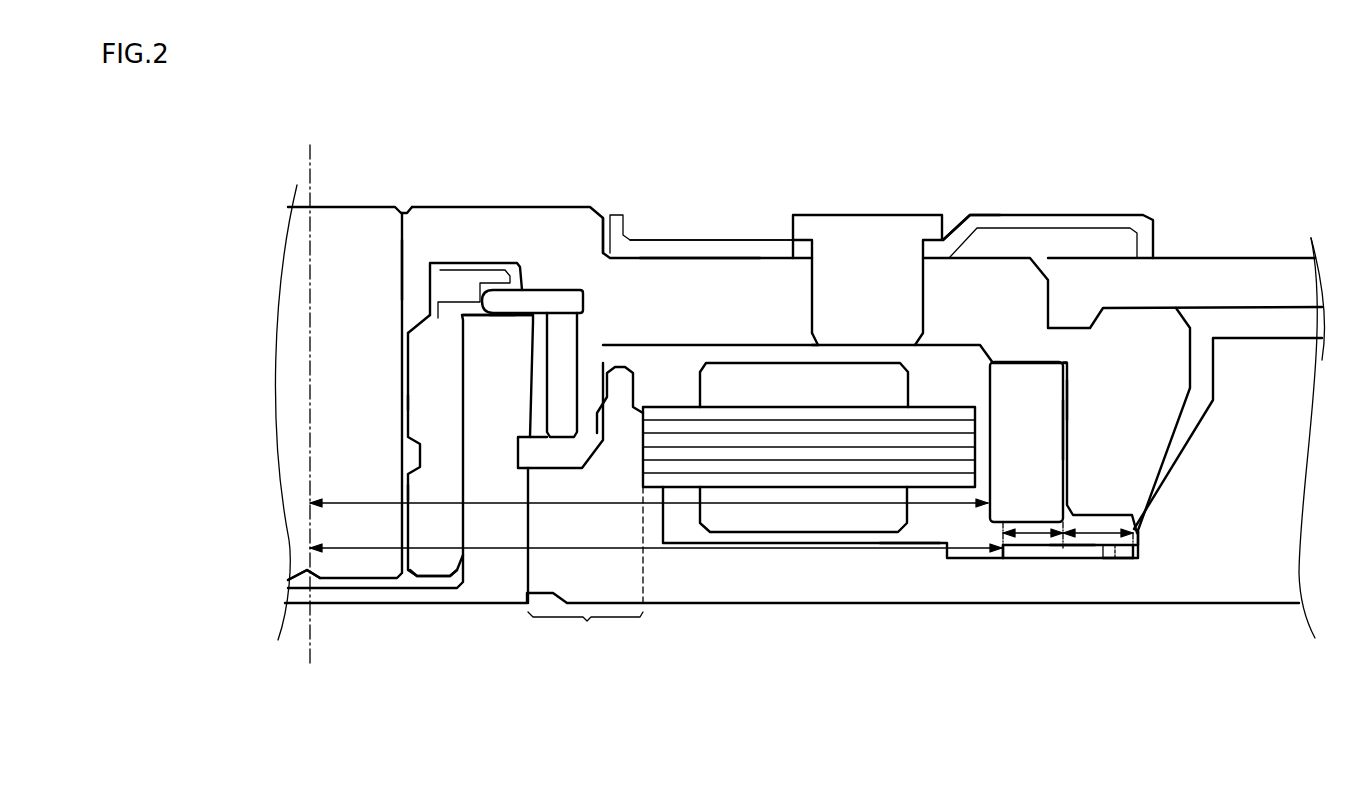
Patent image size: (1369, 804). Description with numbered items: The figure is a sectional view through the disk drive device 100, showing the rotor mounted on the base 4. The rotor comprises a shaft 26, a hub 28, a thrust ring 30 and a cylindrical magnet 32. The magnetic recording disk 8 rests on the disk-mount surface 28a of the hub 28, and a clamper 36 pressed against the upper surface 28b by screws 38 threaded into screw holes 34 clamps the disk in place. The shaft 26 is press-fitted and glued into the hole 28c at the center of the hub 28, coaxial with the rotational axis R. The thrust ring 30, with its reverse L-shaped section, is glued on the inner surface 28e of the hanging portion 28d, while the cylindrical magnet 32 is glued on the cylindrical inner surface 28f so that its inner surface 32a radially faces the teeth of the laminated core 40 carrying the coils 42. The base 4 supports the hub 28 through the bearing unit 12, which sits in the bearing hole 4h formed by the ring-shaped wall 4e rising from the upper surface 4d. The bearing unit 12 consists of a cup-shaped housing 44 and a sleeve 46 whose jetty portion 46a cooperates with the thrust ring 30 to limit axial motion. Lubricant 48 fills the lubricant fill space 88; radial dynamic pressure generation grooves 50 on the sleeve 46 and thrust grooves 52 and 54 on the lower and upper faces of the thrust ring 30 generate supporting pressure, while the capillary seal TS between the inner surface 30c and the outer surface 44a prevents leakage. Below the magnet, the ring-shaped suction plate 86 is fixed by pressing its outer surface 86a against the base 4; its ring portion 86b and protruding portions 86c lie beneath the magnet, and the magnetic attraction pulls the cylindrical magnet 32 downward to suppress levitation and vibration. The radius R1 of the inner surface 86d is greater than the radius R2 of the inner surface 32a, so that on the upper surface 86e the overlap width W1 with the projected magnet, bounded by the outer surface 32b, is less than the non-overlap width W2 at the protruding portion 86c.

The disk drive device 100 is at (828, 794).
The base 4 is at (1290, 517).
The upper surface of the base 4d is at (923, 542).
The ring-shaped wall 4e is at (585, 632).
The bearing hole 4h is at (520, 542).
The magnetic recording disk 8 is at (1291, 277).
The bearing unit 12 is at (465, 708).
The shaft 26 is at (350, 225).
The hub 28 is at (503, 227).
The disk-mount surface 28a is at (1157, 307).
The upper surface of the hub 28b is at (690, 257).
The hole 28c is at (400, 263).
The hanging portion 28d is at (580, 380).
The inner surface of the hanging portion 28e is at (560, 330).
The cylindrical inner surface 28f is at (1066, 407).
The thrust ring 30 is at (558, 323).
The inner surface of the thrust ring 30c is at (587, 407).
The cylindrical magnet 32 is at (1012, 420).
The inner surface of the cylindrical magnet 32a is at (987, 392).
The outer surface of the cylindrical magnet 32b is at (1065, 430).
The screw holes 34 is at (812, 283).
The clamper 36 is at (753, 247).
The screws 38 is at (863, 257).
The laminated core 40 is at (782, 478).
The coils 42 is at (880, 383).
The housing 44 is at (463, 590).
The outer surface of the housing 44a is at (515, 455).
The sleeve 46 is at (437, 570).
The jetty portion 46a is at (478, 275).
The lubricant 48 is at (313, 580).
The radial dynamic pressure generation grooves 50 is at (405, 493).
The first thrust dynamic pressure generation grooves 52 is at (497, 322).
The second thrust dynamic pressure generation grooves 54 is at (493, 283).
The suction plate 86 is at (1030, 553).
The outer surface of the suction plate 86a is at (1137, 553).
The ring portion 86b is at (1073, 553).
The protruding portions 86c is at (1128, 557).
The inner surface of the suction plate 86d is at (998, 555).
The upper surface of the suction plate 86e is at (1103, 553).
The lubricant fill space 88 is at (360, 583).
The rotational axis R is at (310, 390).
The radius of the inner surface of the suction plate R1 is at (655, 550).
The radius of the inner surface of the cylindrical magnet R2 is at (720, 503).
The capillary seal TS is at (518, 337).
The width of the overlap portion W1 is at (1033, 532).
The width of the non-overlap portion W2 is at (1108, 532).